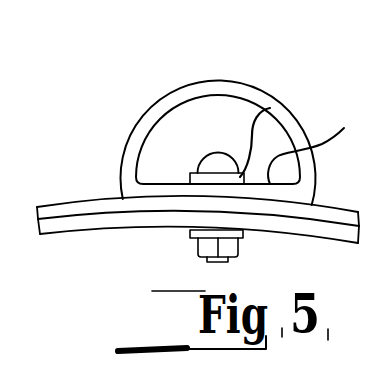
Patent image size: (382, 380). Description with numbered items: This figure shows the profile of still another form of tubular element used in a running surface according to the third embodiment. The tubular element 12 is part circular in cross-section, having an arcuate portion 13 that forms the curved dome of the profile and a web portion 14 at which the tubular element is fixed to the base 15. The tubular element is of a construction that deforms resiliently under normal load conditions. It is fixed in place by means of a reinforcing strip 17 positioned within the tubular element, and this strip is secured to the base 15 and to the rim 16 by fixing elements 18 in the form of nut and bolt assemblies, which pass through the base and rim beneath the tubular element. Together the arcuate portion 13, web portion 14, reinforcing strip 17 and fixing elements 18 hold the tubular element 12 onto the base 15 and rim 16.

The tubular element 12 is at (137, 92).
The arcuate portion 13 is at (234, 88).
The web portion 14 is at (322, 144).
The base 15 is at (52, 207).
The rim 16 is at (62, 233).
The reinforcing strip 17 is at (270, 108).
The fixing elements 18 is at (238, 252).